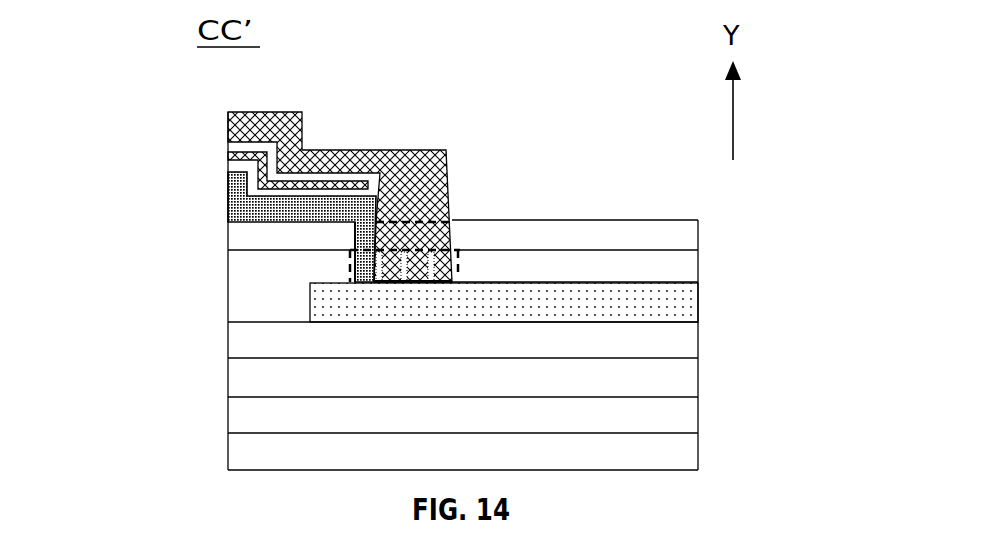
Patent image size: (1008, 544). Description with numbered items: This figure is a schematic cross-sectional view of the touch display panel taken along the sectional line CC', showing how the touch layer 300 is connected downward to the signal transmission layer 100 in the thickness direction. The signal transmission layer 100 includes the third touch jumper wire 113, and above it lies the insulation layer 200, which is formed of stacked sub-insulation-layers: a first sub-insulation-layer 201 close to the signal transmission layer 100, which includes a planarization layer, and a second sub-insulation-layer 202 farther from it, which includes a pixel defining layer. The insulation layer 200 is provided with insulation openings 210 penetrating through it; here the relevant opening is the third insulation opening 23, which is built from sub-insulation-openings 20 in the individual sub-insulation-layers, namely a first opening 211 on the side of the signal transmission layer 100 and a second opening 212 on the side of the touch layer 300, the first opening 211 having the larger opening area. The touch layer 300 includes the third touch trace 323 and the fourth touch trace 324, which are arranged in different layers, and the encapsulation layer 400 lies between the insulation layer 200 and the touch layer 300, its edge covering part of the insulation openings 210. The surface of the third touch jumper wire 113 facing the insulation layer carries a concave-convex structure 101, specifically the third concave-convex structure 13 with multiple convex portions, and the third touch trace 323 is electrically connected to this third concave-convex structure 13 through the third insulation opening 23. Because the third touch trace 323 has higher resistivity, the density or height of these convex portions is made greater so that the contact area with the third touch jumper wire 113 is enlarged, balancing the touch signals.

The touch layer 300 is at (238, 196).
The third touch trace 323 is at (228, 131).
The fourth touch trace 324 is at (228, 161).
The encapsulation layer 400 is at (227, 175).
The insulation openings 210 is at (537, 167).
The third insulation opening 23 is at (470, 52).
The first opening 211 is at (457, 265).
The second opening 212 is at (450, 232).
The sub-insulation-openings 20 is at (487, 165).
The insulation layer 200 is at (564, 249).
The first sub-insulation-layer 201 is at (698, 263).
The second sub-insulation-layer 202 is at (698, 226).
The signal transmission layer 100 is at (597, 304).
The third touch jumper wire 113 is at (698, 306).
The concave-convex structure 101 is at (293, 253).
The third concave-convex structure 13 is at (352, 267).